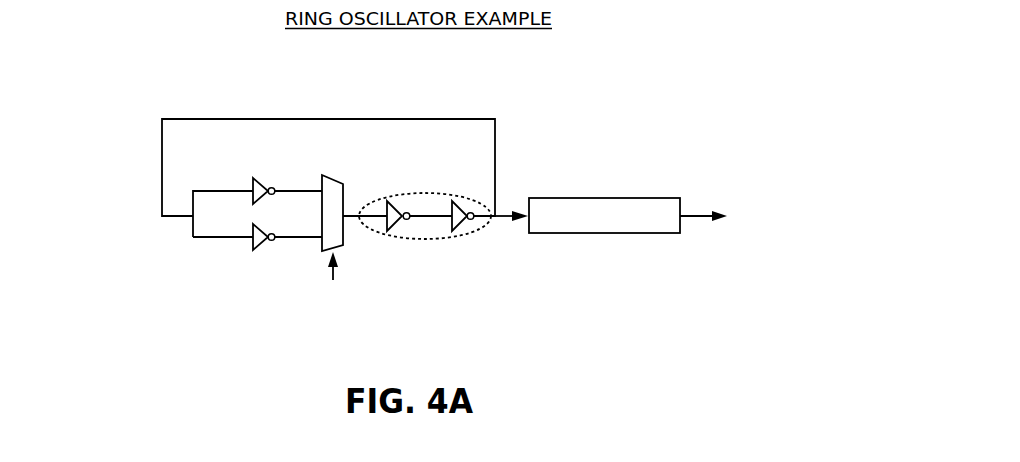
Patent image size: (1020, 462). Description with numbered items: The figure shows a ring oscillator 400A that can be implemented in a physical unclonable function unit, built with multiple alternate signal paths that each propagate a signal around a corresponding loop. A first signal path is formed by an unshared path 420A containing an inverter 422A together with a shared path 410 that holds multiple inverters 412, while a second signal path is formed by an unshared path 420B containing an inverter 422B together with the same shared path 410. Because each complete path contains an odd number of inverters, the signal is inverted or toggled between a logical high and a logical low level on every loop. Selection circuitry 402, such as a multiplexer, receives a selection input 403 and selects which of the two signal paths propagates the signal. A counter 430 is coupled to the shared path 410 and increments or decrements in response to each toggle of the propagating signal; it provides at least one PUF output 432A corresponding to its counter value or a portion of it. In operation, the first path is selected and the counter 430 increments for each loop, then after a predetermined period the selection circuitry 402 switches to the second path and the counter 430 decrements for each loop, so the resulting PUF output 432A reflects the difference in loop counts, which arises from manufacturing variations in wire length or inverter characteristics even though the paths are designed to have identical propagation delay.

The ring oscillator 400A is at (712, 102).
The shared path 410 is at (481, 117).
The selection circuitry 402 is at (346, 190).
The selection input 403 is at (333, 291).
The inverters 412 is at (475, 258).
The unshared path 420A is at (193, 196).
The unshared path 420B is at (193, 228).
The inverter 422A is at (255, 185).
The inverter 422B is at (255, 245).
The counter 430 is at (587, 215).
The PUF output 432A is at (766, 219).